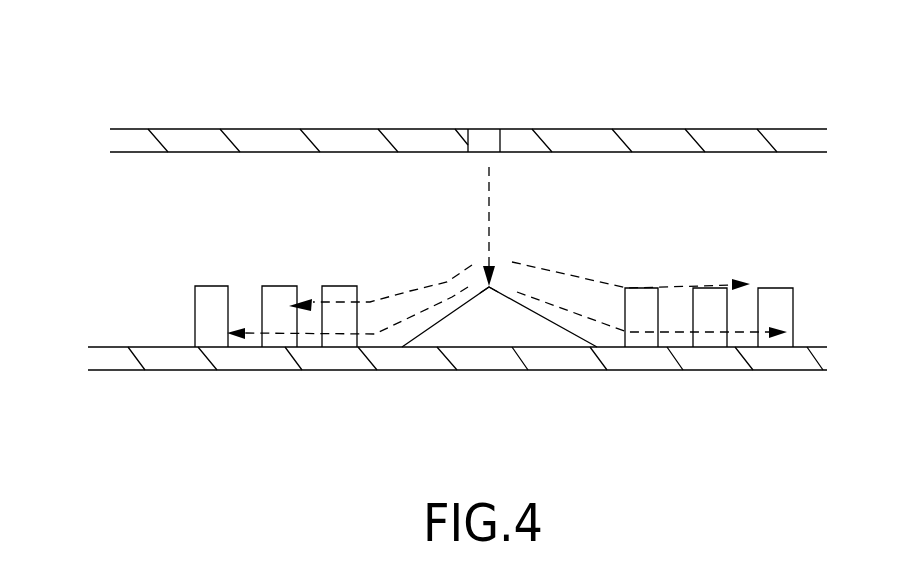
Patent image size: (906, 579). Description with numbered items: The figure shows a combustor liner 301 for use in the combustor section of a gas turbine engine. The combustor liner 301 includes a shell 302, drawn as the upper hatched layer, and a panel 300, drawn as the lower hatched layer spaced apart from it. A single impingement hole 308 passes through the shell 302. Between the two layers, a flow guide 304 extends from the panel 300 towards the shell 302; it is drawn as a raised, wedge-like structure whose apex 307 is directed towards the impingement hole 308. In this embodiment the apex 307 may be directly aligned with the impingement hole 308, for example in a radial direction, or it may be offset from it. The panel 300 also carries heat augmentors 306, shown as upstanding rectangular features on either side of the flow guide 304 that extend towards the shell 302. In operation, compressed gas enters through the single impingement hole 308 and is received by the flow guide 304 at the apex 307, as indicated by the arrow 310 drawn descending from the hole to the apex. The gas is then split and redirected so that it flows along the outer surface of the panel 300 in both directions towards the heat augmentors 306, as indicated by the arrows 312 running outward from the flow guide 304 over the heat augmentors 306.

The panel 300 is at (152, 348).
The combustor liner 301 is at (80, 127).
The shell 302 is at (152, 129).
The flow guide 304 is at (490, 338).
The heat augmentors 306 is at (793, 297).
The apex 307 is at (489, 285).
The impingement hole 308 is at (490, 150).
The arrow 310 is at (491, 200).
The arrows 312 is at (589, 279).